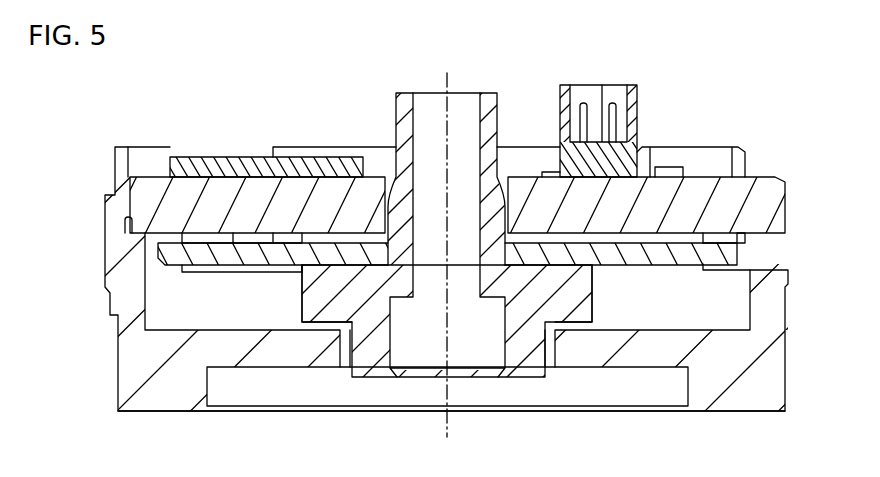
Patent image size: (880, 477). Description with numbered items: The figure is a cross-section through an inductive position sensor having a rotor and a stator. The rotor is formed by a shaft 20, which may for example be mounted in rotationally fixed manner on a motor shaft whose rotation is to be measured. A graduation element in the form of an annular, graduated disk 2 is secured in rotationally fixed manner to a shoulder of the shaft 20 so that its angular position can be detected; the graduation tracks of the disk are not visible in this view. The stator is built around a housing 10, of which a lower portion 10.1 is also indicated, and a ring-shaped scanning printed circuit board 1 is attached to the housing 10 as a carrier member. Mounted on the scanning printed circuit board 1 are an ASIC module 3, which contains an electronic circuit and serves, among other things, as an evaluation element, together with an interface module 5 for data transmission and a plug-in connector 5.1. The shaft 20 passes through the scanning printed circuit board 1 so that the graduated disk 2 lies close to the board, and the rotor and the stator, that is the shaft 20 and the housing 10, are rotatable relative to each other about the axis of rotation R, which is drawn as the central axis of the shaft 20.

The scanning printed circuit board 1 is at (775, 180).
The graduated disk 2 is at (252, 262).
The ASIC module 3 is at (188, 158).
The interface module 5 is at (662, 166).
The plug-in connector 5.1 is at (637, 88).
The housing 10 is at (120, 347).
The housing bottom 10.1 is at (147, 382).
The shaft 20 is at (470, 92).
The axis of rotation R is at (447, 78).